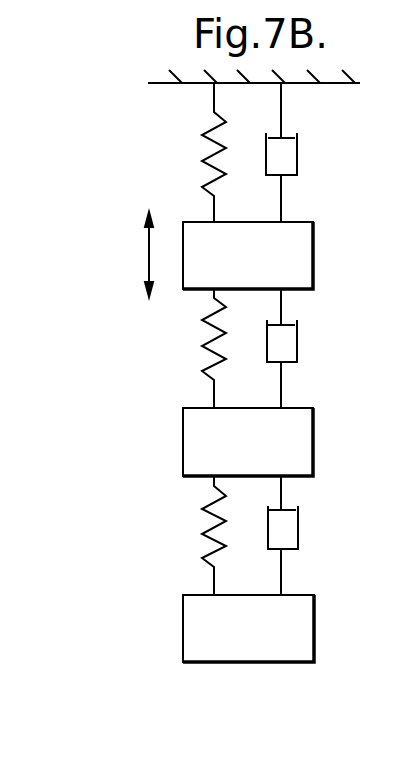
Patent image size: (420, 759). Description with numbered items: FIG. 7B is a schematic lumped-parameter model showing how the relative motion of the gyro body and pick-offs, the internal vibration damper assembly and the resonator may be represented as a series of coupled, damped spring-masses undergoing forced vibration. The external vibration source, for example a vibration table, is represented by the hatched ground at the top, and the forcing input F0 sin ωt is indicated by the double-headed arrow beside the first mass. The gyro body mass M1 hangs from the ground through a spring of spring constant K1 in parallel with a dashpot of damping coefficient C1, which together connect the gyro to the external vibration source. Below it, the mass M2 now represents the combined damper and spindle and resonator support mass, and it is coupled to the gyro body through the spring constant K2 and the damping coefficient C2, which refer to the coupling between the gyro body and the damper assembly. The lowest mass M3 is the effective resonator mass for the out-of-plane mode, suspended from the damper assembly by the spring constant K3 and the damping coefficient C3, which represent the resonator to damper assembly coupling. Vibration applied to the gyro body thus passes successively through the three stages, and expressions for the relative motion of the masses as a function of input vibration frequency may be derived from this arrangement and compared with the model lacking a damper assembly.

The applied force F0 is at (95, 254).
The spring constant K1 is at (195, 152).
The damping coefficient C1 is at (300, 152).
The gyro body mass M1 is at (248, 255).
The spring constant K2 is at (193, 348).
The damping coefficient C2 is at (299, 348).
The combined damper and spindle and resonator support mass M2 is at (248, 442).
The spring constant K3 is at (196, 535).
The damping coefficient C3 is at (300, 535).
The effective resonator mass M3 is at (248, 628).